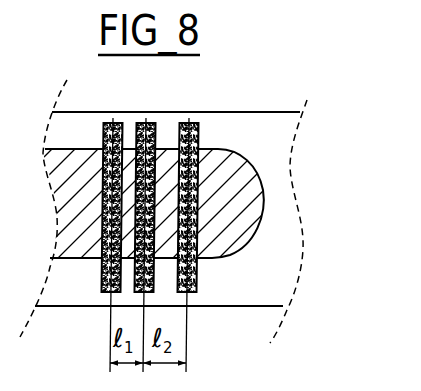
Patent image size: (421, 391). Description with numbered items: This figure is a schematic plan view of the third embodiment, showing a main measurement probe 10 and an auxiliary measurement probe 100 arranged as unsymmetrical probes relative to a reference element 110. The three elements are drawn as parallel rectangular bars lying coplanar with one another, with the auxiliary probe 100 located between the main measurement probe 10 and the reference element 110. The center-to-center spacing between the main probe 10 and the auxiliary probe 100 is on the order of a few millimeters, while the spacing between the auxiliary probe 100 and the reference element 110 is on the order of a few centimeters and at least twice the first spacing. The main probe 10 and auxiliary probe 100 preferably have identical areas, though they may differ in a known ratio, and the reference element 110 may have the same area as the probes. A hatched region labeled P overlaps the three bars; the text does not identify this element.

The main measurement probe 10 is at (102, 280).
The auxiliary measurement probe 100 is at (155, 283).
The reference element 110 is at (197, 280).
The droplet / product P is at (264, 213).